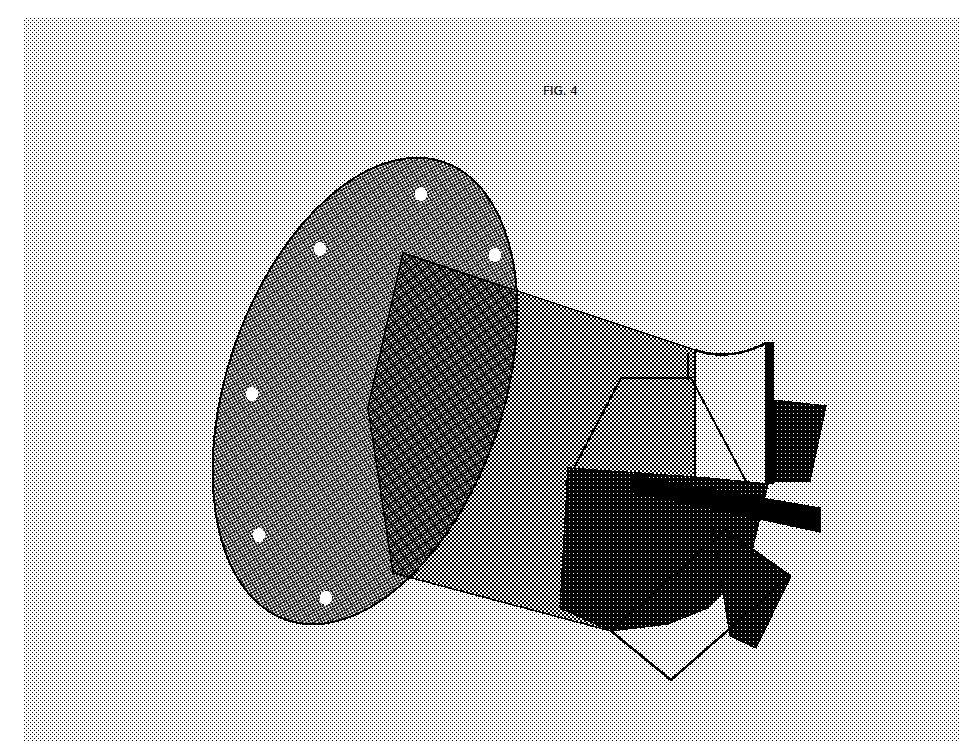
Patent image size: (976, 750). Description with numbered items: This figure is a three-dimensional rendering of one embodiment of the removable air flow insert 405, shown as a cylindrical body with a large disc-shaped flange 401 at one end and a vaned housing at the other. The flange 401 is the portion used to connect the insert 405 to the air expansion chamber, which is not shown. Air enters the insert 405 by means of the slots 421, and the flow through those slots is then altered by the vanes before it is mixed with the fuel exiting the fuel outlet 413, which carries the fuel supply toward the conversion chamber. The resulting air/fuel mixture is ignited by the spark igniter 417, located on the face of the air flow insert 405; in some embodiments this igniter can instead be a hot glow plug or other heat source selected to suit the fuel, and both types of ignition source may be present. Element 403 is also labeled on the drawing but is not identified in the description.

The flange 401 is at (365, 390).
The removable air flow insert 405 is at (558, 433).
The slots 421 is at (666, 454).
The blade 403 is at (819, 416).
The fuel outlet 413 is at (739, 562).
The spark igniter 417 is at (629, 605).